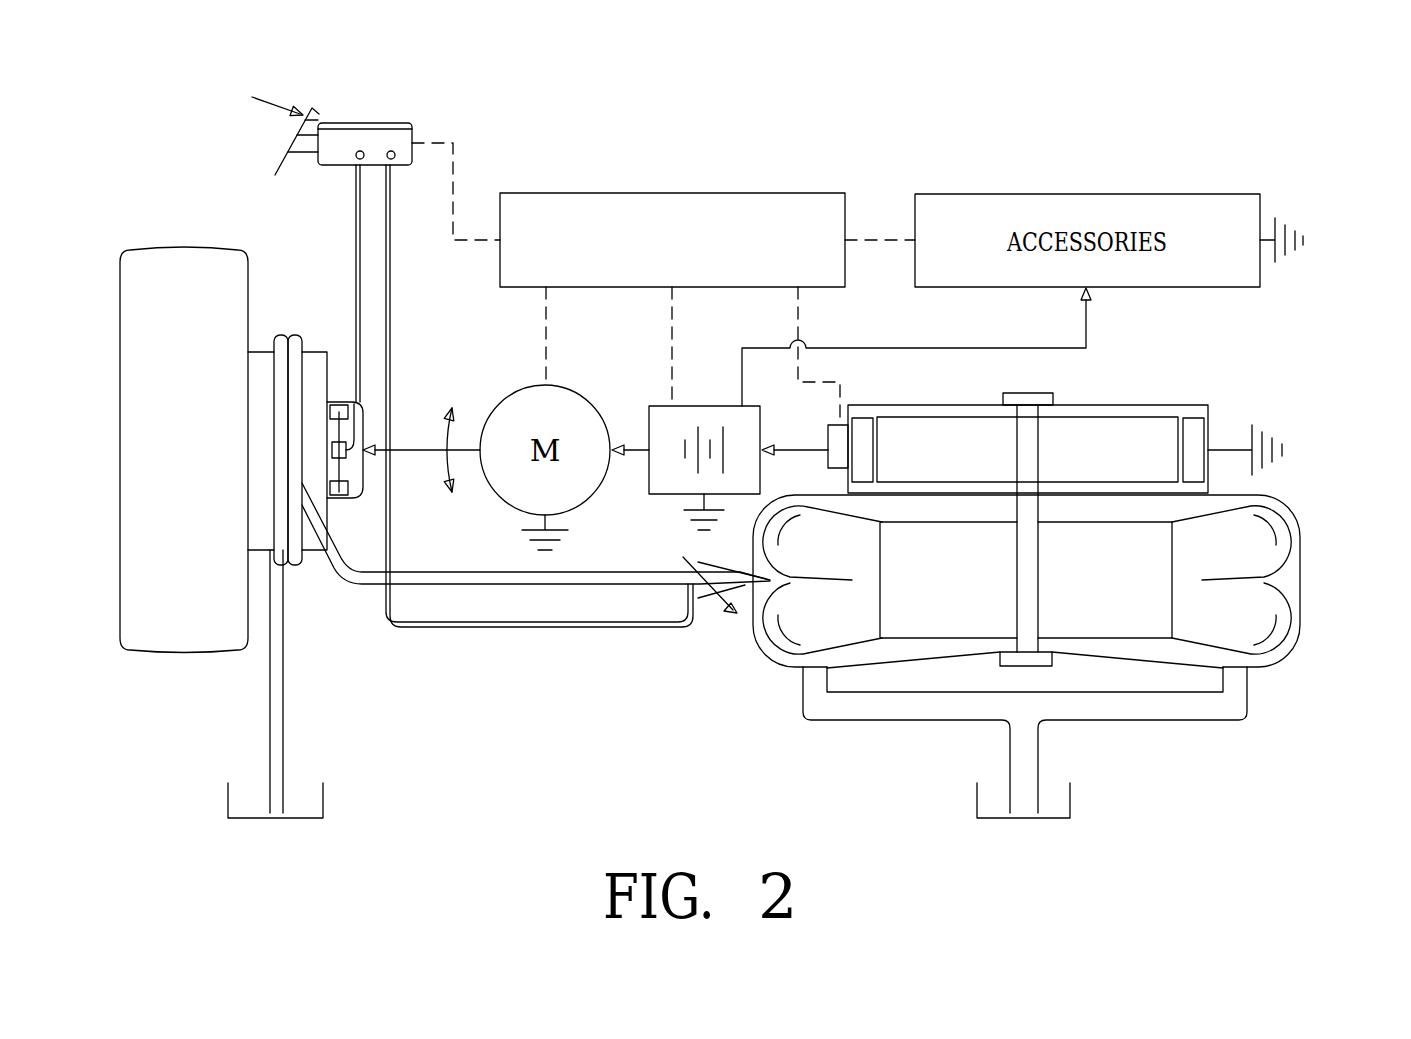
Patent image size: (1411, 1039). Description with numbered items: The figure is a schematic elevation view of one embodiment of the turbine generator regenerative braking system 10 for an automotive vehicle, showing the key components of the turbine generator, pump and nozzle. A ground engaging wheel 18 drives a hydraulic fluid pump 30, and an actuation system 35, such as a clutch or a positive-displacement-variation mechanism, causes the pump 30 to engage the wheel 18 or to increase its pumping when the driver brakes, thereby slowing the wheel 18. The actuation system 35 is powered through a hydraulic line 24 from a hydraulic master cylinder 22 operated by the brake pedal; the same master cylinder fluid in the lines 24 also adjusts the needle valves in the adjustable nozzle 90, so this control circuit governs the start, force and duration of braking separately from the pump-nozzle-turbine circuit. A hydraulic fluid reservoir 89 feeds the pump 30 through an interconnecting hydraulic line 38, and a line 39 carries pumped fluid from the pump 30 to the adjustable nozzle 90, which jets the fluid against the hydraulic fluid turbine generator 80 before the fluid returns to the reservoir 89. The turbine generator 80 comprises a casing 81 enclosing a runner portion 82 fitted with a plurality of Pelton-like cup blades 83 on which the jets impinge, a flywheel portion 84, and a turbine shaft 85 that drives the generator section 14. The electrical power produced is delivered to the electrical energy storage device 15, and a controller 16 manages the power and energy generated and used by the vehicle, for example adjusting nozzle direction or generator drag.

The turbine generator regenerative braking system 10 is at (1260, 122).
The generator section 14 is at (1160, 390).
The electrical energy storage device 15 is at (706, 406).
The controller 16 is at (676, 193).
The ground engaging wheel 18 is at (100, 500).
The hydraulic master cylinder 22 is at (375, 123).
The hydraulic line 24 is at (356, 192).
The hydraulic fluid pump 30 is at (313, 572).
The actuation system 35 is at (344, 357).
The hydraulic line 38 is at (283, 695).
The hydraulic line 39 is at (630, 572).
The hydraulic fluid turbine generator 80 is at (1073, 648).
The casing 81 is at (1283, 503).
The runner portion 82 is at (773, 655).
The cup blade 83 is at (1272, 604).
The flywheel portion 84 is at (1155, 548).
The turbine shaft 85 is at (1030, 578).
The hydraulic fluid reservoir 89 is at (316, 805).
The adjustable nozzle 90 is at (727, 634).